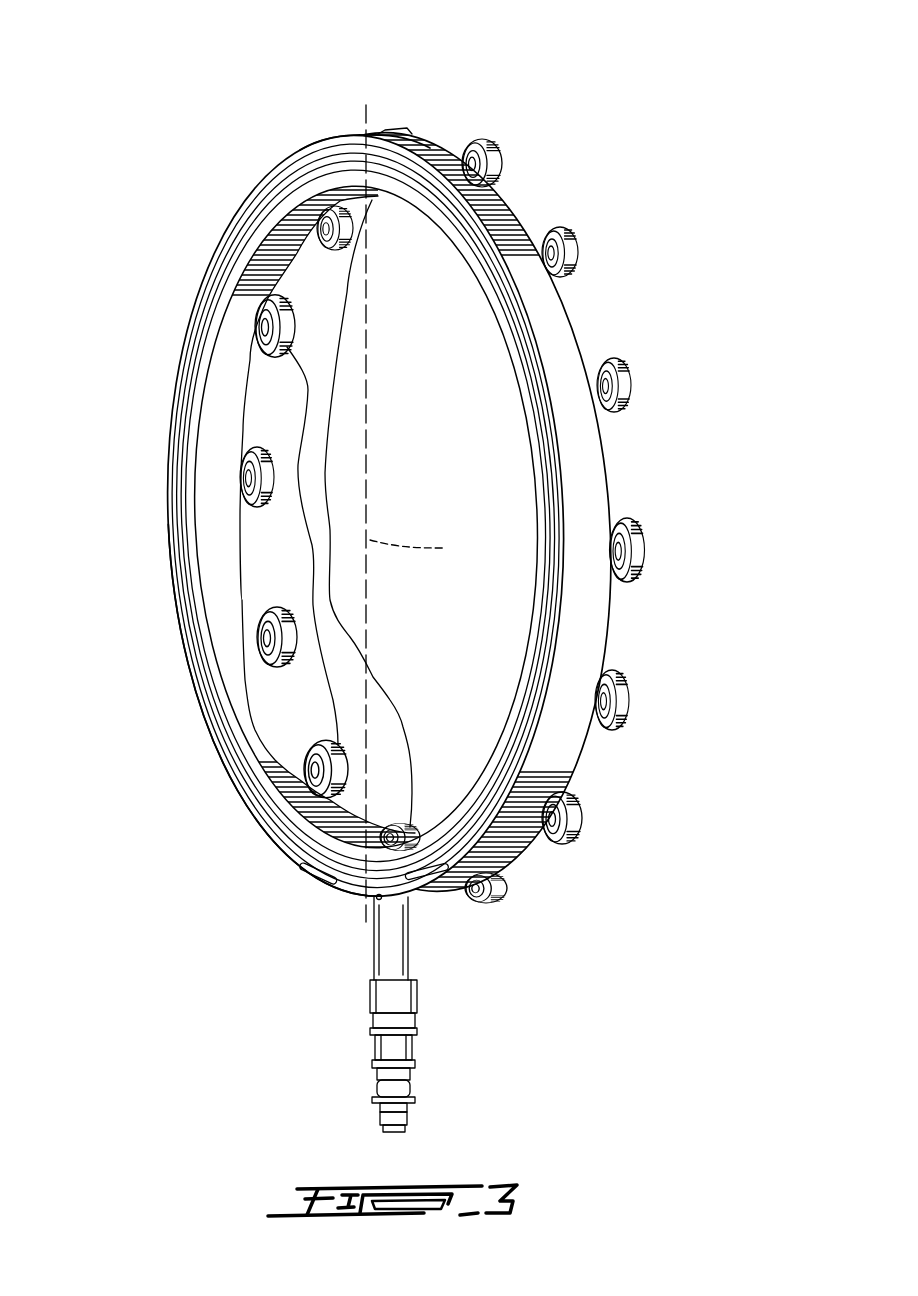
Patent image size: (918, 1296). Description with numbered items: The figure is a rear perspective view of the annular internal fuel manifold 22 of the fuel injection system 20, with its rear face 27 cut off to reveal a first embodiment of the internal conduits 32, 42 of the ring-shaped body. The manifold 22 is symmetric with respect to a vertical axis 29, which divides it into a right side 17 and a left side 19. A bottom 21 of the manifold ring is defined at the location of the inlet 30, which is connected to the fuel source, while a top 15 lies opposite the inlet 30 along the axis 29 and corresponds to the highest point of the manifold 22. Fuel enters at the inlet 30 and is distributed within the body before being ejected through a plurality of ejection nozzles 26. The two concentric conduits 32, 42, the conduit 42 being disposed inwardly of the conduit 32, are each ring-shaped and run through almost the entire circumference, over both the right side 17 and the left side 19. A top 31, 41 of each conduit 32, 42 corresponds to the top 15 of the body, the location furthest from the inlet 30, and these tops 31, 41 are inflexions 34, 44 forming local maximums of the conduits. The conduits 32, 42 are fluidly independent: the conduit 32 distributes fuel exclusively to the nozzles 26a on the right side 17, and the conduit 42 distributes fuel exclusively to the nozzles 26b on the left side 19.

The top 15 is at (368, 135).
The right side 17 is at (206, 712).
The left side 19 is at (556, 330).
The fuel injection system 20 is at (405, 467).
The bottom 21 is at (382, 899).
The fuel manifold 22 is at (610, 625).
The ejection nozzles 26 is at (511, 521).
The nozzles on the right side 26a is at (270, 482).
The nozzles on the left side 26b is at (493, 163).
The rear face 27 is at (200, 410).
The axis 29 is at (424, 552).
The inlet 30 is at (398, 998).
The top of the conduit 31 is at (358, 137).
The conduit 32 is at (556, 470).
The inflexion 34 is at (362, 135).
The top of the conduit 41 is at (370, 184).
The conduit 42 is at (186, 500).
The inflexion 44 is at (404, 204).